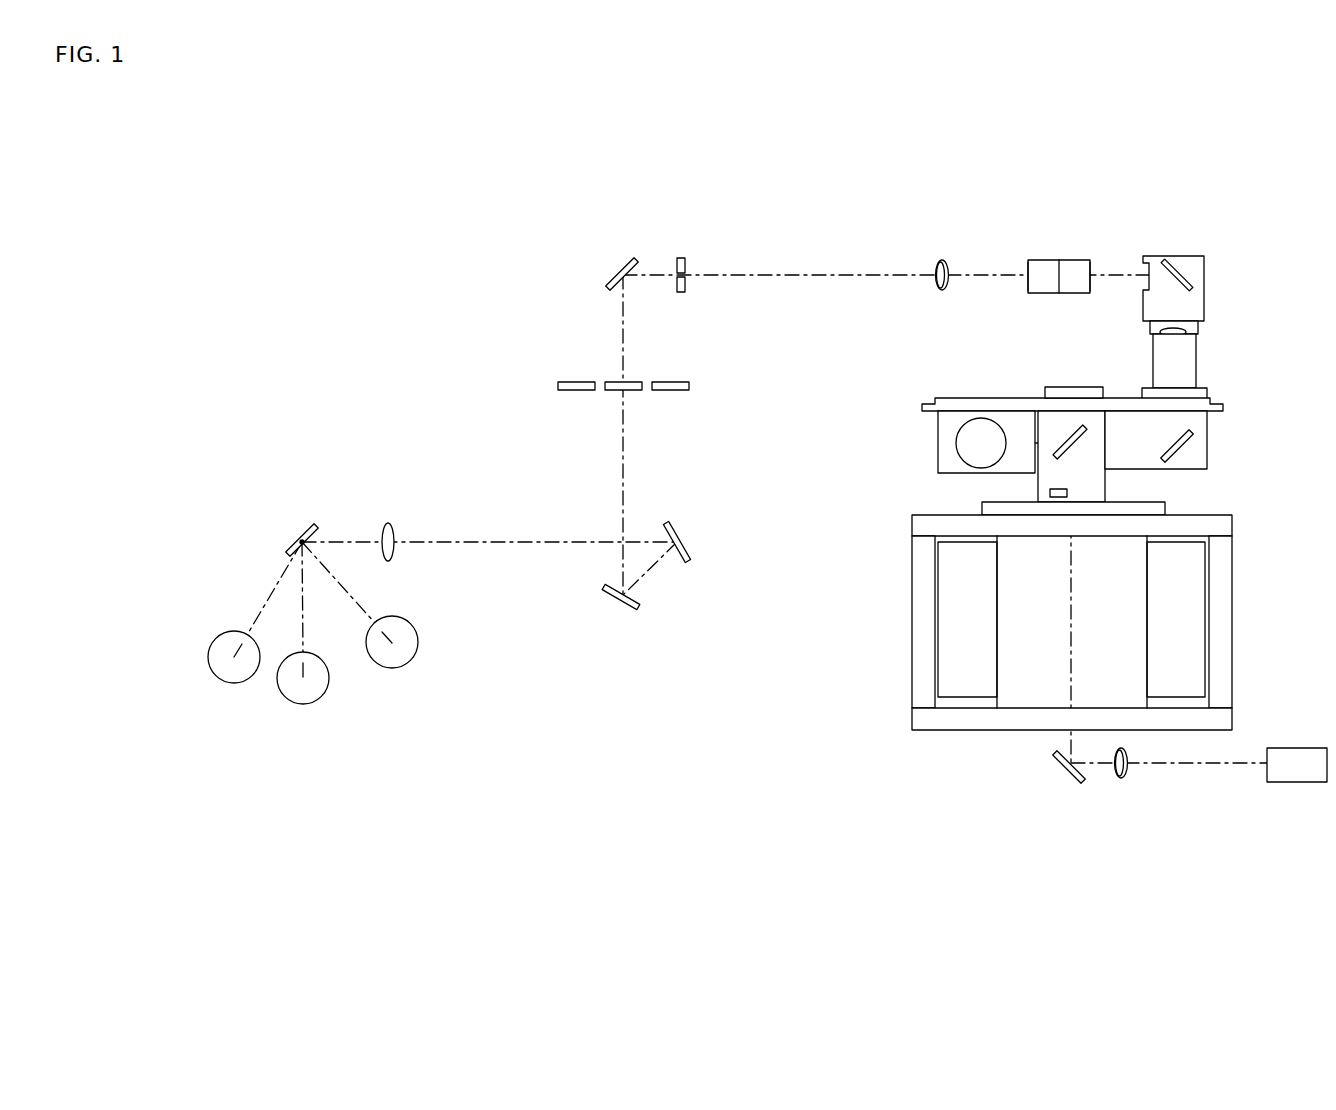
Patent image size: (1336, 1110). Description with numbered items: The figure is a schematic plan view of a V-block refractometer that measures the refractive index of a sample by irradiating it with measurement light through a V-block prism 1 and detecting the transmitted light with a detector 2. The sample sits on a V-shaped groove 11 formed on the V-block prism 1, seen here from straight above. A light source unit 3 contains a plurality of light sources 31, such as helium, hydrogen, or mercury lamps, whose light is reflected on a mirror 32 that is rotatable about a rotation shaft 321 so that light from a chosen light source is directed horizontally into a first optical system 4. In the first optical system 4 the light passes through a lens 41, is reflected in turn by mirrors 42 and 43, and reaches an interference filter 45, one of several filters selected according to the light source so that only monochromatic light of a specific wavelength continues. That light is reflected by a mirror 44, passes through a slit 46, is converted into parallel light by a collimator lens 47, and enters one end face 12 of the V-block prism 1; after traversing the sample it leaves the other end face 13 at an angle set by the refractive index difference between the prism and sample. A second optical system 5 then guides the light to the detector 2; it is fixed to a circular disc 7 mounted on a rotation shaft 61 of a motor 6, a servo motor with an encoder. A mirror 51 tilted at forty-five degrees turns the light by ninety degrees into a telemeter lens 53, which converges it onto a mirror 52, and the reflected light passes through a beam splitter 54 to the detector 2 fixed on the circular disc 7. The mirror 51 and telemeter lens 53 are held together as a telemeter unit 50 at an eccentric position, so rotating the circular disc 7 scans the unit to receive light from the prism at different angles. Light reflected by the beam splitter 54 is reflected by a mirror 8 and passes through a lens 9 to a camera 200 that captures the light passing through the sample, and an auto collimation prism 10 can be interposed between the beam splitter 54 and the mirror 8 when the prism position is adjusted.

The V-block prism 1 is at (1073, 260).
The detector 2 is at (980, 425).
The light source unit 3 is at (311, 649).
The first optical system 4 is at (798, 200).
The second optical system 5 is at (1232, 269).
The motor 6 is at (1200, 612).
The circular disc 7 is at (928, 404).
The mirror 8 is at (1068, 778).
The lens 9 is at (1122, 778).
The auto collimation prism 10 is at (1050, 493).
The V-shaped groove 11 is at (1046, 260).
The one end face 12 is at (1028, 265).
The other end face 13 is at (1090, 265).
The light sources 31 is at (223, 683).
The mirror 32 is at (248, 521).
The rotation shaft 321 is at (298, 527).
The lens 41 is at (388, 522).
The mirror 42 is at (683, 548).
The mirror 43 is at (622, 600).
The mirror 44 is at (612, 276).
The interference filter 45 is at (548, 372).
The slit 46 is at (683, 256).
The collimator lens 47 is at (941, 260).
The telemeter unit 50 is at (1196, 256).
The mirror 51 is at (1177, 255).
The mirror 52 is at (1193, 443).
The telemeter lens 53 is at (1182, 322).
The beam splitter 54 is at (1075, 430).
The rotation shaft 61 is at (1100, 483).
The camera 200 is at (1296, 782).